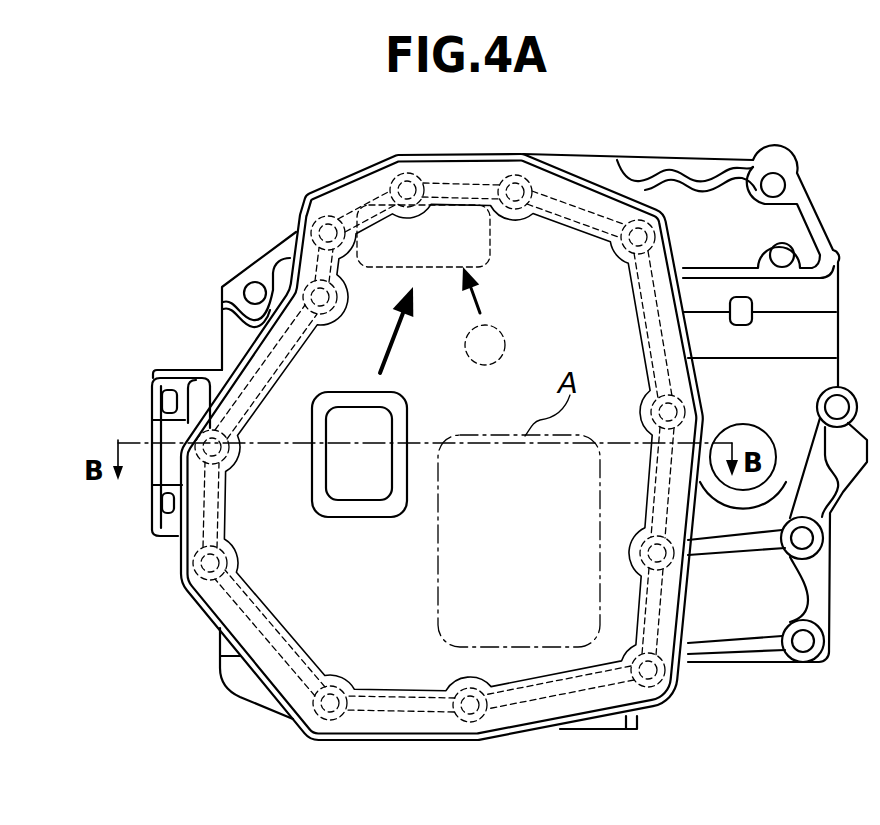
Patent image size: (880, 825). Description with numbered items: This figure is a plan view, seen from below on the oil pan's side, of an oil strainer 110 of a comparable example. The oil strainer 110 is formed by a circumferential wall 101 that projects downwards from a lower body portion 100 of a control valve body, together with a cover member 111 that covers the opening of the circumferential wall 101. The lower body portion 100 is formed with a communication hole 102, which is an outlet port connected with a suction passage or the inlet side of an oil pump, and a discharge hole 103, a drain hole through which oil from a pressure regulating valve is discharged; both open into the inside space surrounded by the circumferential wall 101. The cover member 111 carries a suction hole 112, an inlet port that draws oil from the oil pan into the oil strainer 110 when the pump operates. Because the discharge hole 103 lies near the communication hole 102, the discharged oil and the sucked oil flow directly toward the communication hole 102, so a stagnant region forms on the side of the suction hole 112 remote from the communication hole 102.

The lower body portion 100 is at (752, 676).
The oil strainer 110 is at (87, 603).
The cover member 111 is at (205, 630).
The circumferential wall 101 is at (233, 592).
The communication hole 102 is at (482, 245).
The discharge hole 103 is at (492, 347).
The suction hole 112 is at (353, 488).